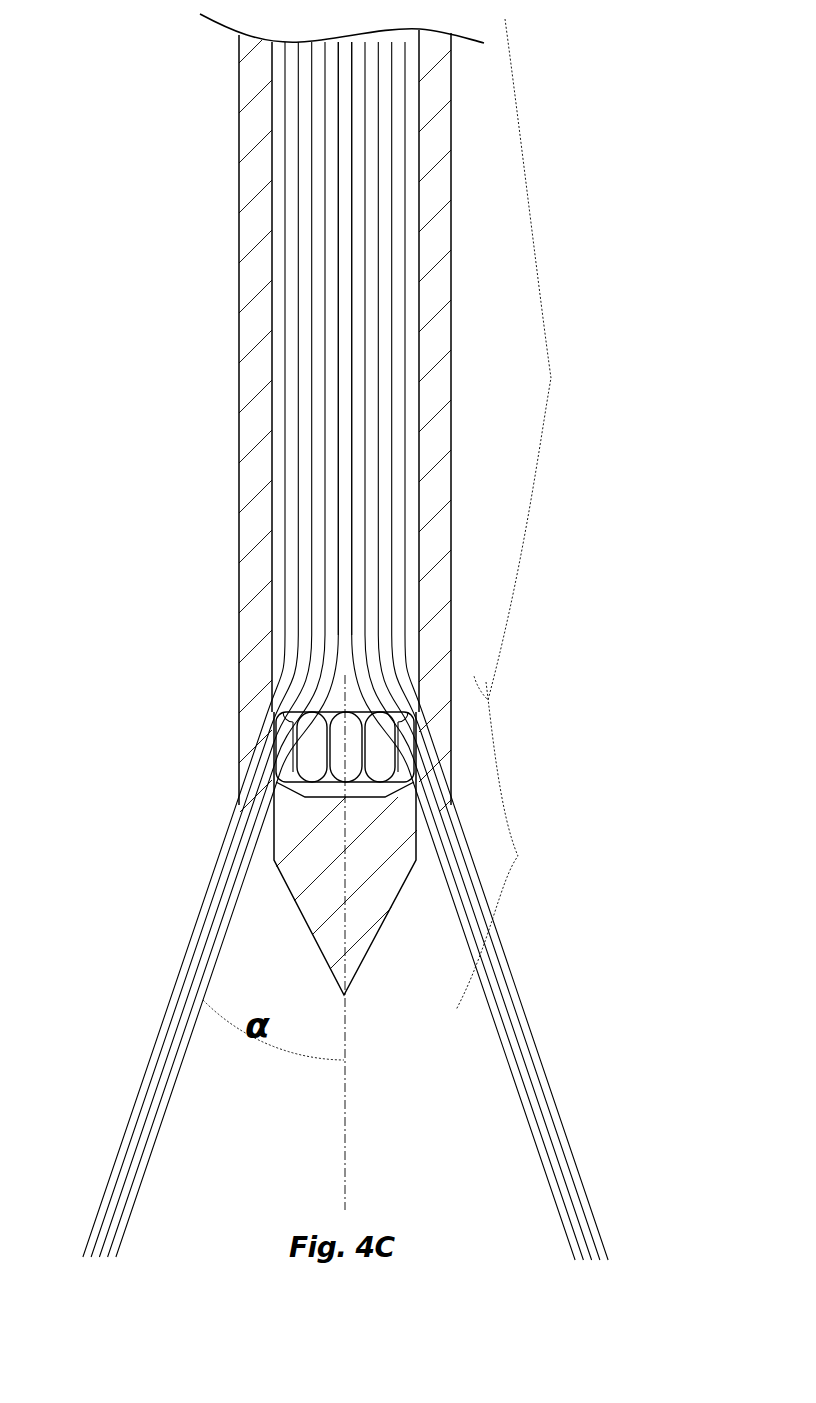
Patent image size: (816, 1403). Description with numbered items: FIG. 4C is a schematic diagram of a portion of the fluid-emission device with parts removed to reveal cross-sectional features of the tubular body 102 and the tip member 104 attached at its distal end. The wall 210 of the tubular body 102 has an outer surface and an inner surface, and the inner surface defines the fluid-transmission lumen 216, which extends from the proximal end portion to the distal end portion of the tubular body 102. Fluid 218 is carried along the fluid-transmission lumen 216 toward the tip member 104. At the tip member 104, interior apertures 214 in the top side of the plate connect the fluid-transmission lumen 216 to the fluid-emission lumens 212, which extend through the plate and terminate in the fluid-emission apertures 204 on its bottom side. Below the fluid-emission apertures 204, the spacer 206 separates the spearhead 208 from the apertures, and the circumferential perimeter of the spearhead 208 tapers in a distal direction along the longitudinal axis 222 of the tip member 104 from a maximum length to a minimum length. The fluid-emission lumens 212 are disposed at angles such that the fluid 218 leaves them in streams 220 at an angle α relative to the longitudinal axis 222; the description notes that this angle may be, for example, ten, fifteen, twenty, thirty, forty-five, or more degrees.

The tubular body 102 is at (534, 359).
The tip member 104 is at (505, 846).
The fluid-emission apertures 204 is at (245, 800).
The spacer 206 is at (277, 842).
The spearhead 208 is at (303, 908).
The wall 210 is at (252, 478).
The fluid-emission lumens 212 is at (263, 758).
The interior apertures 214 is at (273, 715).
The fluid-transmission lumen 216 is at (292, 268).
The fluid 218 is at (292, 410).
The streams 220 is at (170, 1018).
The longitudinal axis 222 is at (345, 1182).